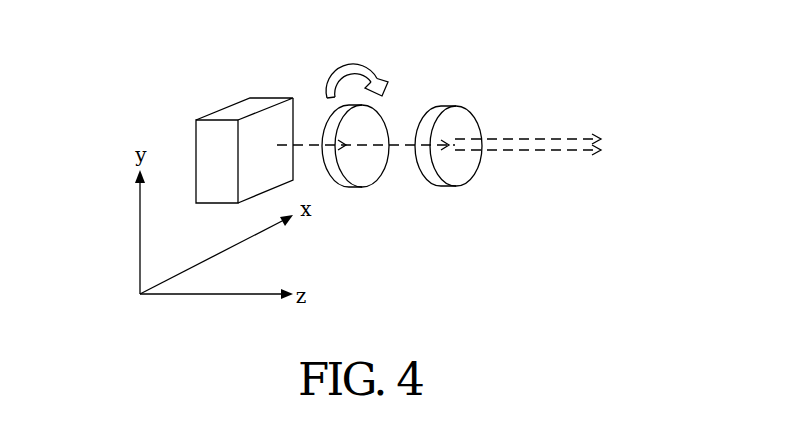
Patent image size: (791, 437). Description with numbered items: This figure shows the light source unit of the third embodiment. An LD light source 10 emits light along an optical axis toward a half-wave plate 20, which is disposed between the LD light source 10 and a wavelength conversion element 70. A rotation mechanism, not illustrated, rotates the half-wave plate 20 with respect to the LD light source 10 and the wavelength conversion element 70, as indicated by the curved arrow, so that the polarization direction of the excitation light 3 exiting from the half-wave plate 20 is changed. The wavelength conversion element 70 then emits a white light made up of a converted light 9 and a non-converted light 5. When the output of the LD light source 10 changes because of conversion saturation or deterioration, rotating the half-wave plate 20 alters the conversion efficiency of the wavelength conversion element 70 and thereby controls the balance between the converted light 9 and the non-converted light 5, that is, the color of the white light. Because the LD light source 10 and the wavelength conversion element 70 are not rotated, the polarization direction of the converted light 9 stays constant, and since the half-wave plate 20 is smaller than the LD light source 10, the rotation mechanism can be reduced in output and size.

The LD light source 10 is at (243, 98).
The excitation light 3 is at (312, 146).
The half-wave plate 20 is at (363, 187).
The wavelength conversion element 70 is at (428, 110).
The converted light 9 is at (560, 140).
The non-converted light 5 is at (525, 150).